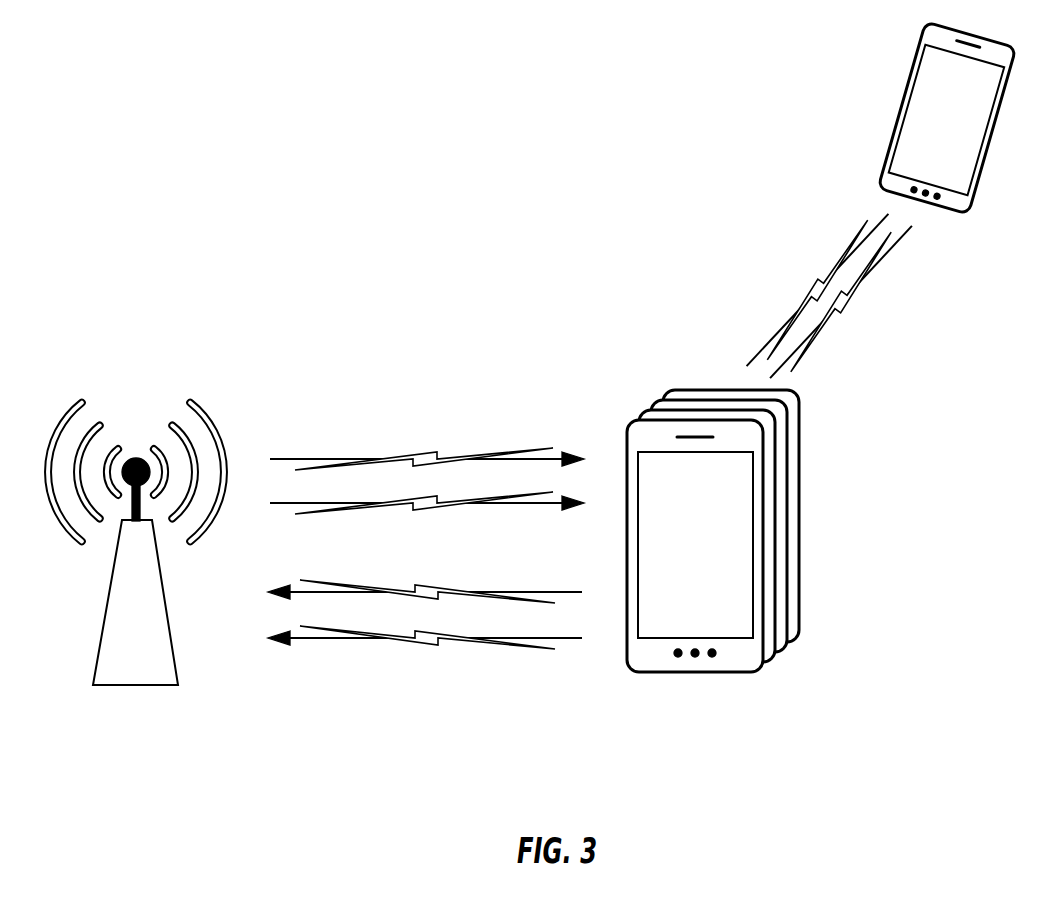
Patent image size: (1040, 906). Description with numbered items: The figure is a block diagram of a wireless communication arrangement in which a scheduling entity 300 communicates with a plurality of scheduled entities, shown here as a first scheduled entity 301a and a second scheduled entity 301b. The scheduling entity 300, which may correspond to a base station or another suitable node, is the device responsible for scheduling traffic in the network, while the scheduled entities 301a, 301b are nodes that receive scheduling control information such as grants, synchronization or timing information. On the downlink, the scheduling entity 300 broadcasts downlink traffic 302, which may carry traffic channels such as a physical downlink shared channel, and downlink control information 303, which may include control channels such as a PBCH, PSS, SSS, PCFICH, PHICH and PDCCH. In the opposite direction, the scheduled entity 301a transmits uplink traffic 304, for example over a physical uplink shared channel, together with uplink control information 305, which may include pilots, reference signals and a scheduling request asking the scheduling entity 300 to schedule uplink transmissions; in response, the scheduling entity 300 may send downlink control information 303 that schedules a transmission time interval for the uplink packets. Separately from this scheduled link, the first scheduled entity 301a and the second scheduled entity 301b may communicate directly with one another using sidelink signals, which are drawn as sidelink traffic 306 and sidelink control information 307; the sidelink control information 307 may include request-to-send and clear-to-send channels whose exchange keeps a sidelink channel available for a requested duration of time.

The scheduling entity 300 is at (175, 687).
The first scheduled entity 301a is at (697, 673).
The second scheduled entity 301b is at (897, 123).
The downlink traffic 302 is at (427, 446).
The downlink control information 303 is at (427, 490).
The uplink traffic 304 is at (425, 579).
The uplink control information 305 is at (425, 625).
The sidelink traffic 306 is at (787, 290).
The sidelink control information 307 is at (860, 302).